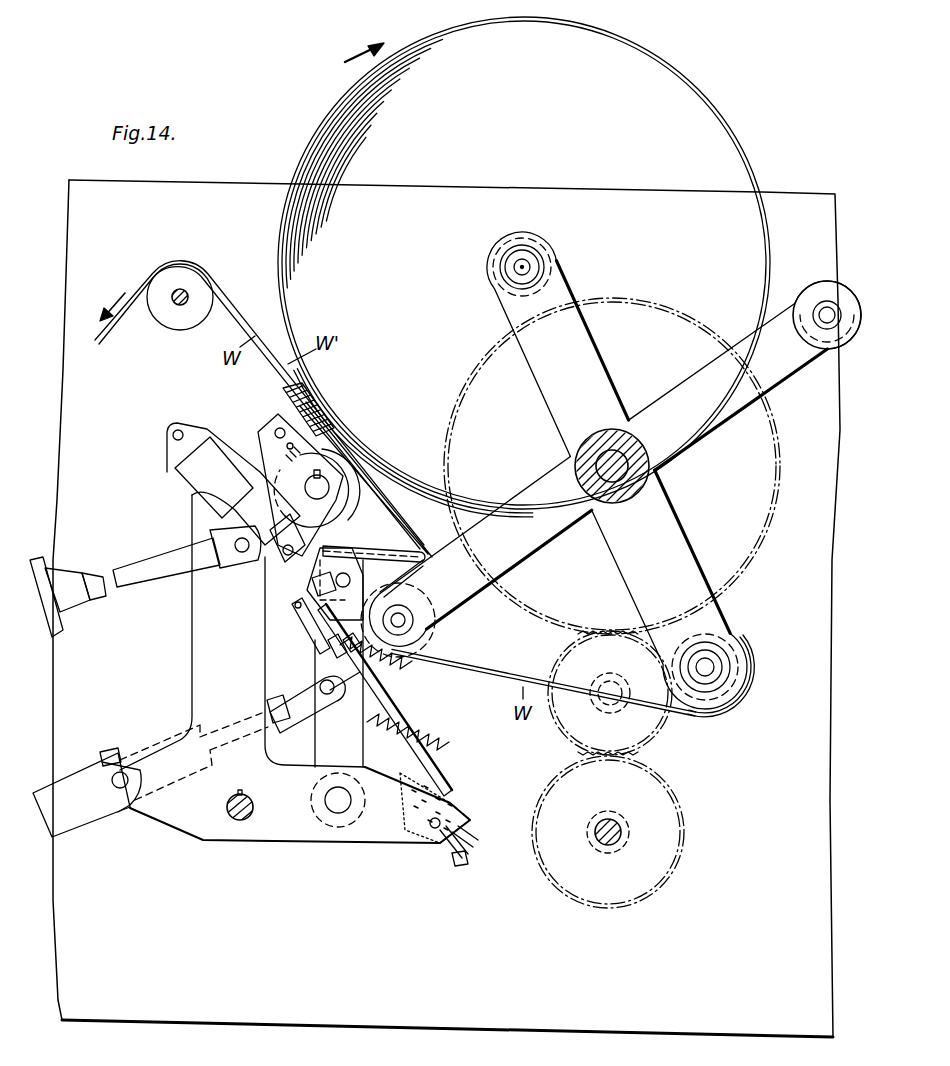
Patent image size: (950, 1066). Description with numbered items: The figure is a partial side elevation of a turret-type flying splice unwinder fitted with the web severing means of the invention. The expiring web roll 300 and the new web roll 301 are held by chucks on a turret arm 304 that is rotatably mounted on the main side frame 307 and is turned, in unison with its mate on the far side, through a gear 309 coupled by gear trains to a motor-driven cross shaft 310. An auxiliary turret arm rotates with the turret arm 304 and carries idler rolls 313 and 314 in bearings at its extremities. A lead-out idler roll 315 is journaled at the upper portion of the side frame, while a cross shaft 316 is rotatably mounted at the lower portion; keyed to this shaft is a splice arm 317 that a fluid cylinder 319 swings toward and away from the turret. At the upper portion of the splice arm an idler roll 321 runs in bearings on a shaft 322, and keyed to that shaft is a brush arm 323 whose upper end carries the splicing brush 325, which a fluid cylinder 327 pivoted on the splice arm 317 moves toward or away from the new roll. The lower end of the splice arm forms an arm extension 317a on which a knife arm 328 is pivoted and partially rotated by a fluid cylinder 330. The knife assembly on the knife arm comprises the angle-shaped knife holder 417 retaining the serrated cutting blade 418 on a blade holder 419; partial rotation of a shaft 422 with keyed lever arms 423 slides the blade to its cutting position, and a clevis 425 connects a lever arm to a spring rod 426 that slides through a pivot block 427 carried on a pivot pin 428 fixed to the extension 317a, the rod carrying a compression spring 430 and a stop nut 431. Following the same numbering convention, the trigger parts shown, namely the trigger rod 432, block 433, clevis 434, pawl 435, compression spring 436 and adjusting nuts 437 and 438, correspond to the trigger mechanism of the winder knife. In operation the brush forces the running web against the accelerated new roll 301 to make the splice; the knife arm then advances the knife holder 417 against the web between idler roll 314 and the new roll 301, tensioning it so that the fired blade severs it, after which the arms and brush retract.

The new web roll 301 is at (708, 113).
The turret arm 304 is at (600, 347).
The idler roll 313 is at (821, 283).
The expiring web roll 300 is at (757, 668).
The gear 309 is at (668, 730).
The cross shaft 310 is at (622, 830).
The lead-out idler roll 315 is at (162, 318).
The splicing brush 325 is at (289, 399).
The fluid cylinder 327 is at (203, 483).
The shaft 322 is at (326, 478).
The idler roll 321 is at (338, 482).
The brush arm 323 is at (323, 506).
The knife holder 417 is at (380, 548).
The serrated cutting blade 418 is at (400, 558).
The blade holder 419 is at (396, 576).
The shaft 422 is at (333, 581).
The lever arm 423 is at (316, 589).
The clevis 425 is at (321, 631).
The block 434 is at (328, 656).
The pulley 435 is at (425, 621).
The idler roll 314 is at (420, 645).
The collar 433 is at (362, 650).
The spring 436 is at (381, 690).
The spring 437 is at (396, 706).
The rod 432 is at (406, 738).
The spring rod 426 is at (353, 701).
The knife arm 328 is at (323, 743).
The fluid cylinder 319 is at (70, 573).
The splice arm 317 is at (200, 644).
The fluid cylinder 330 is at (107, 814).
The cross shaft 316 is at (245, 822).
The arm extension 317a is at (306, 832).
The compression spring 430 is at (384, 768).
The block 438 is at (500, 787).
The pivot block 427 is at (466, 831).
The pivot pin 428 is at (434, 829).
The stop nut 431 is at (455, 870).
The main side frame 307 is at (487, 976).